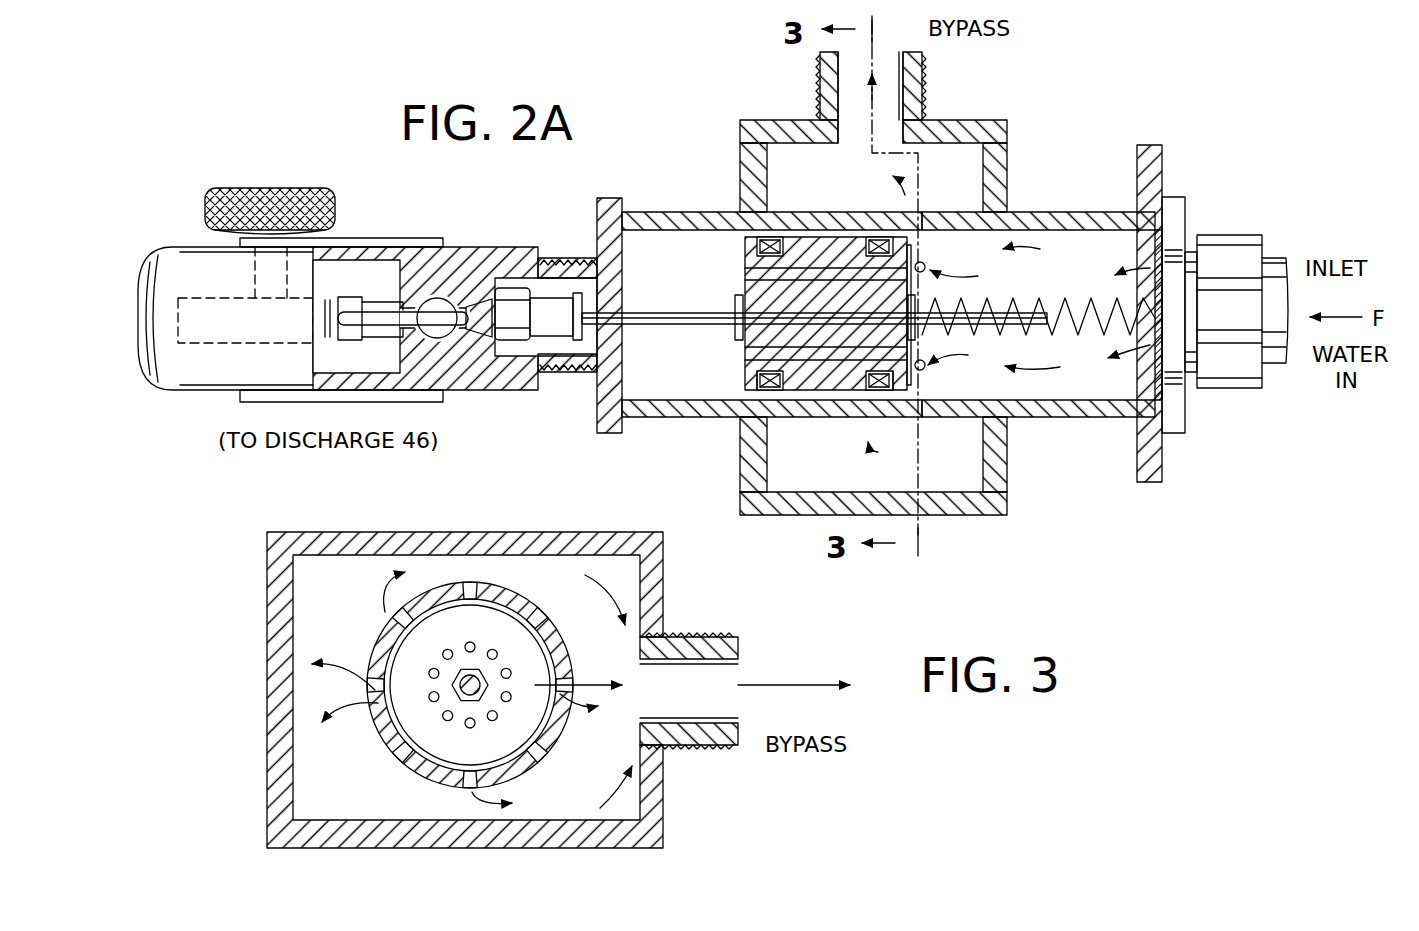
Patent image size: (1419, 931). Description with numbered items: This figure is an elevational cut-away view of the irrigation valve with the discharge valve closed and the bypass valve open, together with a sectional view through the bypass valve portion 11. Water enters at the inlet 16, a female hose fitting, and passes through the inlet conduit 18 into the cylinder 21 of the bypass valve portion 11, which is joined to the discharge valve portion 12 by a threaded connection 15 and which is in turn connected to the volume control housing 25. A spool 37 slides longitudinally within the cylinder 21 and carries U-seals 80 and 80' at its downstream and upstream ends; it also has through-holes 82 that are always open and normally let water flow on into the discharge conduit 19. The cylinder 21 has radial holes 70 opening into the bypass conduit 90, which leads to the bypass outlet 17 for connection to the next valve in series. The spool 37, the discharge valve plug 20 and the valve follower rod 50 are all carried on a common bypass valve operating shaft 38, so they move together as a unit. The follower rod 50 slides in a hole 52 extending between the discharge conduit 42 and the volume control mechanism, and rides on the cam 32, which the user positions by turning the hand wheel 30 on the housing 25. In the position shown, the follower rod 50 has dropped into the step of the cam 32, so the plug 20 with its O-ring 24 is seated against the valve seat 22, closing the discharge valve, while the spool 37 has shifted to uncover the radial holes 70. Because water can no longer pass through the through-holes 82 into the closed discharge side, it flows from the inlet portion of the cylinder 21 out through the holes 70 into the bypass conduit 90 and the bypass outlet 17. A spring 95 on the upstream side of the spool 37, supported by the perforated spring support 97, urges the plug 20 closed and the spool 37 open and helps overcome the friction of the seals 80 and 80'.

In FIG. 2A, the bypass valve portion 11 is at (850, 230).
In FIG. 2A, the discharge valve portion 12 is at (487, 245).
In FIG. 2A, the threaded connection 15 is at (597, 352).
In FIG. 2A, the inlet 16 is at (1243, 388).
In FIG. 2A, the bypass outlet 17 is at (925, 96).
In FIG. 3, the bypass outlet 17 is at (720, 746).
In FIG. 2A, the inlet conduit 18 is at (1095, 212).
In FIG. 2A, the discharge conduit 19 is at (668, 212).
In FIG. 2A, the discharge valve plug 20 is at (515, 290).
In FIG. 2A, the cylinder 21 is at (1038, 232).
In FIG. 2A, the valve seat 22 is at (486, 328).
In FIG. 2A, the O-ring 24 is at (512, 335).
In FIG. 2A, the housing 25 is at (180, 247).
In FIG. 2A, the hand wheel 30 is at (320, 190).
In FIG. 2A, the cam 32 is at (350, 298).
In FIG. 2A, the spool 37 is at (758, 240).
In FIG. 3, the spool 37 is at (447, 622).
In FIG. 2A, the bypass valve operating shaft 38 is at (700, 314).
In FIG. 3, the bypass valve operating shaft 38 is at (475, 678).
In FIG. 2A, the discharge conduit 42 is at (452, 342).
In FIG. 2A, the valve follower rod 50 is at (440, 300).
In FIG. 2A, the hole 52 is at (403, 345).
In FIG. 2A, the radial holes 70 is at (920, 262).
In FIG. 3, the radial holes 70 is at (390, 628).
In FIG. 2A, the U-seal 80 is at (783, 416).
In FIG. 2A, the U-seal 80' is at (855, 411).
In FIG. 2A, the through-holes 82 is at (772, 256).
In FIG. 3, the through-holes 82 is at (428, 674).
In FIG. 2A, the bypass conduit 90 is at (1007, 470).
In FIG. 3, the bypass conduit 90 is at (352, 848).
In FIG. 2A, the spring 95 is at (1100, 312).
In FIG. 2A, the spring support 97 is at (1160, 268).